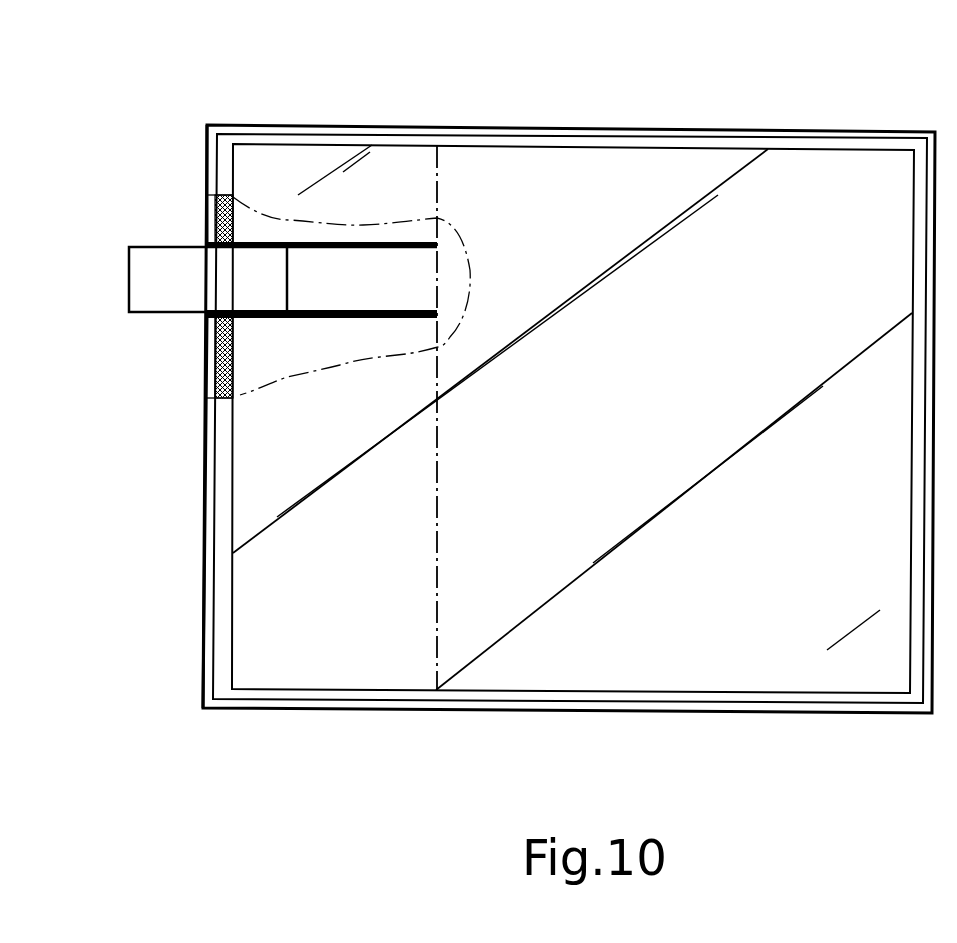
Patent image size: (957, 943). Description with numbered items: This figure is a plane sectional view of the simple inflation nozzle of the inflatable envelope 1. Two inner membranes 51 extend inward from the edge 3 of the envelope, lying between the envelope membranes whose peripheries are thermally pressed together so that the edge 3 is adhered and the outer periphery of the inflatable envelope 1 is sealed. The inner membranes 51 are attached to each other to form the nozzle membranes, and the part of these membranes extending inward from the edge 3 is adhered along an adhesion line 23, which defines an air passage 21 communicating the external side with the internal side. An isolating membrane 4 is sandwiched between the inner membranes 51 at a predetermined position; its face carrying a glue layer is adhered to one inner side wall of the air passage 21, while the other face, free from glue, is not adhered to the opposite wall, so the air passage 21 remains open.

The inflatable envelope 1 is at (678, 183).
The edge 3 is at (225, 518).
The isolating membrane 4 is at (148, 287).
The air passage 21 is at (317, 282).
The adhesion line 23 is at (300, 318).
The inner membrane 51 is at (437, 175).